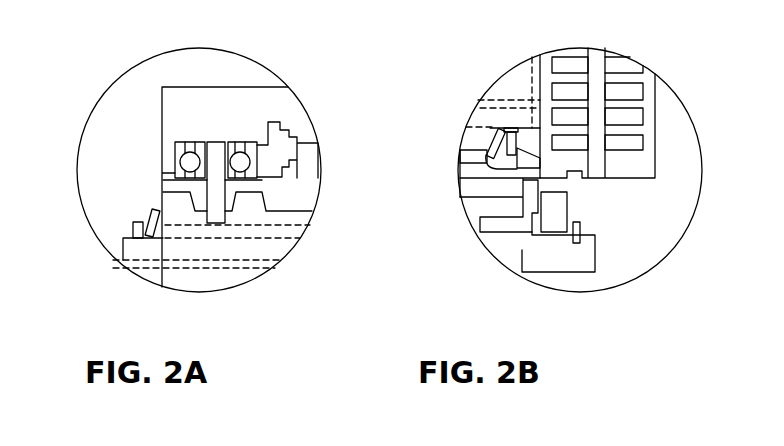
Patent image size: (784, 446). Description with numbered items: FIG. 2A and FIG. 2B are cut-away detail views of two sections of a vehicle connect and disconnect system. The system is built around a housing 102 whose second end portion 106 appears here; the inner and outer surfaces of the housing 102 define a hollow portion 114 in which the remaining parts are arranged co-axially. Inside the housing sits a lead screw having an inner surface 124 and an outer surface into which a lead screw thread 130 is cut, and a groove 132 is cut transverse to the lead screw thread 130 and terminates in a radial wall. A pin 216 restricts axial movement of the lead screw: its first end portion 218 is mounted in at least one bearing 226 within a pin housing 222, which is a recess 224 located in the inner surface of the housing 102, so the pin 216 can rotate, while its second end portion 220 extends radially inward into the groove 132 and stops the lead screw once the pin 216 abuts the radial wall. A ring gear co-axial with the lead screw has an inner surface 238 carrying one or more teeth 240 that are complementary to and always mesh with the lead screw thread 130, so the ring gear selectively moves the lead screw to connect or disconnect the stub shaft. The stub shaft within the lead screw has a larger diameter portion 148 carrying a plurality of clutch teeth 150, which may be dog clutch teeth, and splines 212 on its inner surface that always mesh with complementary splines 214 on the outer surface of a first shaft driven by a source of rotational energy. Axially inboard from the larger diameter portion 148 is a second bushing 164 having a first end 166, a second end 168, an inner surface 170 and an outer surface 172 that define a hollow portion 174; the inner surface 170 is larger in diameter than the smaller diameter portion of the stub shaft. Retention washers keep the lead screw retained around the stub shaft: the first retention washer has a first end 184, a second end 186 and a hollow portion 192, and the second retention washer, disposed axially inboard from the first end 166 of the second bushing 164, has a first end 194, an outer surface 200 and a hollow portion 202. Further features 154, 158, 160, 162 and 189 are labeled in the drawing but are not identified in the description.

In FIG. 2B, the housing 102 is at (532, 274).
In FIG. 2A, the second end portion 106 is at (266, 87).
In FIG. 2A, the hollow portion 114 is at (162, 177).
In FIG. 2A, the inner surface 124 is at (243, 238).
In FIG. 2A, the lead screw thread 130 is at (167, 192).
In FIG. 2A, the groove 132 is at (302, 211).
In FIG. 2B, the larger diameter portion 148 is at (580, 180).
In FIG. 2B, the clutch teeth 150 is at (592, 128).
In FIG. 2A, the lower bracket 154 is at (150, 243).
In FIG. 2A, the bracket leg 158 is at (140, 255).
In FIG. 2A, the bracket arm 160 is at (140, 228).
In FIG. 2A, the hinge 162 is at (150, 245).
In FIG. 2B, the second bushing 164 is at (515, 128).
In FIG. 2B, the first end 166 is at (512, 148).
In FIG. 2B, the second end 168 is at (515, 133).
In FIG. 2B, the inner surface 170 is at (518, 130).
In FIG. 2B, the outer surface 172 is at (513, 158).
In FIG. 2B, the hollow portion 174 is at (517, 130).
In FIG. 2A, the first end 184 is at (133, 226).
In FIG. 2A, the second end 186 is at (160, 232).
In FIG. 2A, the link 189 is at (153, 247).
In FIG. 2A, the hollow portion 192 is at (152, 210).
In FIG. 2B, the first end 194 is at (496, 130).
In FIG. 2B, the outer surface 200 is at (488, 165).
In FIG. 2B, the hollow portion 202 is at (498, 128).
In FIG. 2A, the splines 212 is at (217, 268).
In FIG. 2A, the splines 214 is at (280, 252).
In FIG. 2A, the pin 216 is at (215, 142).
In FIG. 2A, the first end portion 218 is at (232, 133).
In FIG. 2A, the second end portion 220 is at (225, 216).
In FIG. 2A, the pin housing 222 is at (300, 153).
In FIG. 2A, the recess 224 is at (190, 142).
In FIG. 2A, the bearing 226 is at (175, 152).
In FIG. 2B, the inner surface 238 is at (480, 137).
In FIG. 2B, the teeth 240 is at (462, 152).